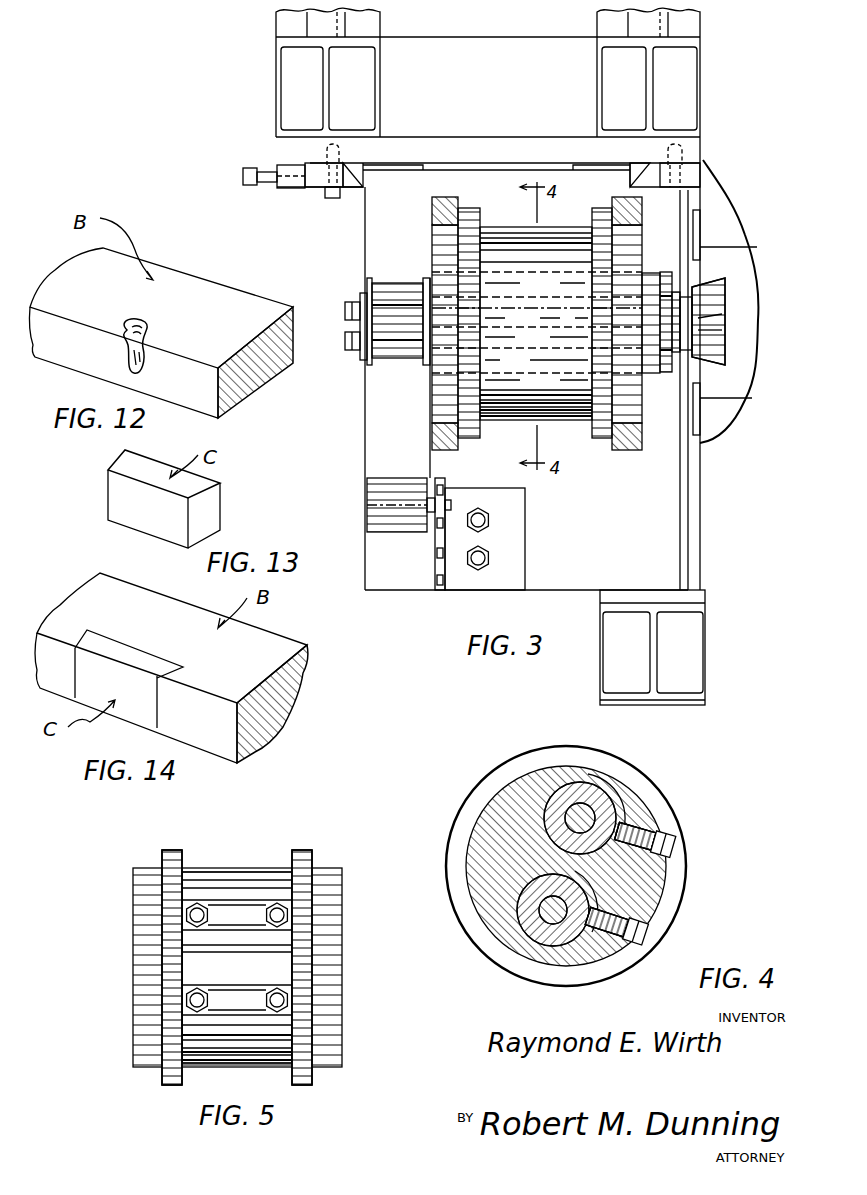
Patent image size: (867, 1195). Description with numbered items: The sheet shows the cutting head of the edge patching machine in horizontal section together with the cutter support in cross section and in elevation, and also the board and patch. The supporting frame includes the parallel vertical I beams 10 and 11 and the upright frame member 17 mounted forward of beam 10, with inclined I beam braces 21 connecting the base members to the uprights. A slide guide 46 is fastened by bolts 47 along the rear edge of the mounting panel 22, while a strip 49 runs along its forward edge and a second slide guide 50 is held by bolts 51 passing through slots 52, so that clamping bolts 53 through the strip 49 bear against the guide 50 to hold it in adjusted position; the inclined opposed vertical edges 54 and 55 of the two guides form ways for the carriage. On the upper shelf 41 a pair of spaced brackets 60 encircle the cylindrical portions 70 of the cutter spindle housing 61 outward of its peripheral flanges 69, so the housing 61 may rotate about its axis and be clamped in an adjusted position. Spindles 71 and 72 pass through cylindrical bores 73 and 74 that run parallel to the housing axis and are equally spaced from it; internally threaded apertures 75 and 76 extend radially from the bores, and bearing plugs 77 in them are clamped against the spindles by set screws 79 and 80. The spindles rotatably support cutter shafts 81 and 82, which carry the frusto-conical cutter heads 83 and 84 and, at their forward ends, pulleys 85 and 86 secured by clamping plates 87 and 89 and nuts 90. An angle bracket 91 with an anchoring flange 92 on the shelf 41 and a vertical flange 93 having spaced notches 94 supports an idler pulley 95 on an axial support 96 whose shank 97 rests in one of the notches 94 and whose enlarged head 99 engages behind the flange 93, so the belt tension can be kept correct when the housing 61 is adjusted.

In FIG. 3, the I beam 10 is at (685, 85).
In FIG. 3, the I beam 11 is at (690, 648).
In FIG. 3, the upright frame member 17 is at (296, 97).
In FIG. 3, the I beam brace 21 is at (318, 25).
In FIG. 3, the mounting panel 22 is at (690, 158).
In FIG. 3, the upper shelf 41 is at (647, 537).
In FIG. 3, the slide guide 46 is at (690, 175).
In FIG. 3, the bolt 47 is at (700, 150).
In FIG. 3, the strip 49 is at (292, 188).
In FIG. 3, the second slide guide 50 is at (318, 188).
In FIG. 3, the bolt 51 is at (331, 198).
In FIG. 3, the slot 52 is at (358, 160).
In FIG. 3, the clamping bolt 53 is at (243, 180).
In FIG. 3, the inclined vertical edge 54 is at (640, 177).
In FIG. 3, the inclined vertical edge 55 is at (365, 177).
In FIG. 3, the bracket 60 is at (440, 437).
In FIG. 3, the cutter spindle housing 61 is at (520, 431).
In FIG. 4, the cutter spindle housing 61 is at (463, 823).
In FIG. 5, the cutter spindle housing 61 is at (257, 862).
In FIG. 3, the peripheral flange 69 is at (471, 210).
In FIG. 5, the peripheral flange 69 is at (172, 852).
In FIG. 3, the cylindrical portion 70 is at (445, 402).
In FIG. 3, the spindle 71 is at (440, 268).
In FIG. 4, the spindle 71 is at (598, 800).
In FIG. 3, the spindle 72 is at (440, 376).
In FIG. 4, the spindle 72 is at (530, 918).
In FIG. 4, the cylindrical bore 73 is at (620, 800).
In FIG. 4, the cylindrical bore 74 is at (545, 935).
In FIG. 4, the internally threaded aperture 75 is at (675, 838).
In FIG. 4, the internally threaded aperture 76 is at (628, 943).
In FIG. 4, the bearing plug 77 is at (625, 832).
In FIG. 4, the set screw 79 is at (668, 852).
In FIG. 4, the set screw 80 is at (655, 937).
In FIG. 3, the cutter shaft 81 is at (558, 297).
In FIG. 4, the cutter shaft 81 is at (571, 804).
In FIG. 3, the cutter shaft 82 is at (521, 350).
In FIG. 4, the cutter shaft 82 is at (562, 918).
In FIG. 3, the cutter head 83 is at (712, 308).
In FIG. 3, the cutter head 84 is at (700, 348).
In FIG. 3, the pulley 85 is at (392, 290).
In FIG. 3, the pulley 86 is at (386, 356).
In FIG. 3, the clamping plate 87 is at (366, 295).
In FIG. 3, the clamping plate 89 is at (362, 356).
In FIG. 3, the nut 90 is at (345, 340).
In FIG. 3, the angle bracket 91 is at (436, 584).
In FIG. 3, the anchoring flange 92 is at (508, 558).
In FIG. 3, the vertical flange 93 is at (446, 585).
In FIG. 3, the notch 94 is at (431, 577).
In FIG. 3, the idler pulley 95 is at (385, 505).
In FIG. 3, the axial support 96 is at (433, 488).
In FIG. 3, the shank 97 is at (450, 512).
In FIG. 3, the enlarged head 99 is at (452, 506).